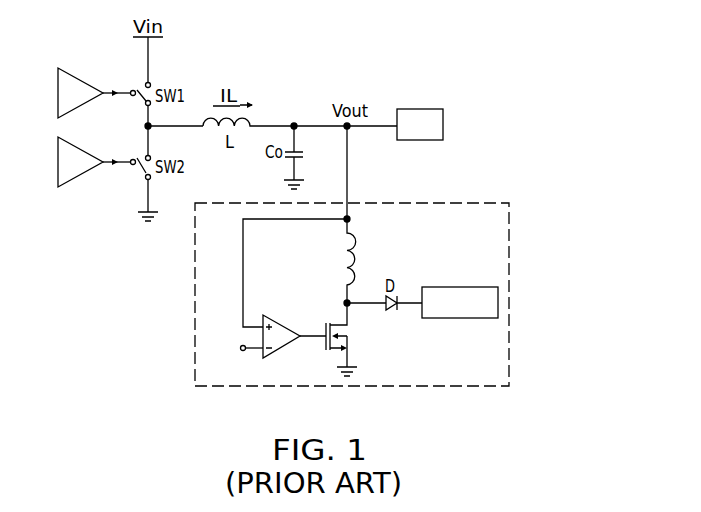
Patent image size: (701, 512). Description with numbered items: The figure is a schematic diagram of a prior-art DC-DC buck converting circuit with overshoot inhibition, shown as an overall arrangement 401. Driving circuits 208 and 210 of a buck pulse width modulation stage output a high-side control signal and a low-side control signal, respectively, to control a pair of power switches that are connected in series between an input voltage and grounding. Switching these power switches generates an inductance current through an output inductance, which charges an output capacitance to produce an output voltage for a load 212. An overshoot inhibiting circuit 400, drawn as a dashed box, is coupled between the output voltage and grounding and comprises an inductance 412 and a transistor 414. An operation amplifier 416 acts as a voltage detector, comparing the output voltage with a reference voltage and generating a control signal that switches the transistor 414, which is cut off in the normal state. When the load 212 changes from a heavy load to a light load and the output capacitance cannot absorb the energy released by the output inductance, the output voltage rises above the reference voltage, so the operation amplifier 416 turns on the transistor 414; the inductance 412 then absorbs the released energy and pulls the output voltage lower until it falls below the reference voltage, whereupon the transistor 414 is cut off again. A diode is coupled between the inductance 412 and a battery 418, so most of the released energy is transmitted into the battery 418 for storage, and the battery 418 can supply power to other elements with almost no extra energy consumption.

The driving circuit 208 is at (84, 82).
The driving circuit 210 is at (84, 151).
The load 212 is at (420, 109).
The overshoot inhibiting circuit 400 is at (195, 293).
The power supply system 401 is at (512, 57).
The inductance 412 is at (367, 252).
The transistor 414 is at (354, 344).
The operation amplifier 416 is at (282, 347).
The battery 418 is at (462, 287).